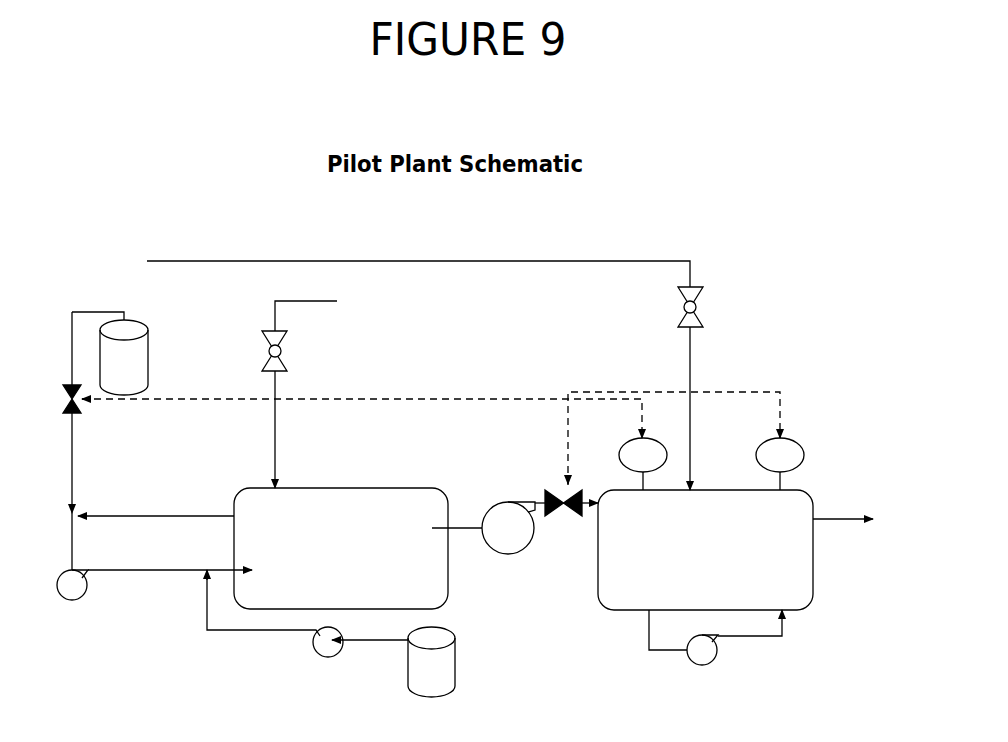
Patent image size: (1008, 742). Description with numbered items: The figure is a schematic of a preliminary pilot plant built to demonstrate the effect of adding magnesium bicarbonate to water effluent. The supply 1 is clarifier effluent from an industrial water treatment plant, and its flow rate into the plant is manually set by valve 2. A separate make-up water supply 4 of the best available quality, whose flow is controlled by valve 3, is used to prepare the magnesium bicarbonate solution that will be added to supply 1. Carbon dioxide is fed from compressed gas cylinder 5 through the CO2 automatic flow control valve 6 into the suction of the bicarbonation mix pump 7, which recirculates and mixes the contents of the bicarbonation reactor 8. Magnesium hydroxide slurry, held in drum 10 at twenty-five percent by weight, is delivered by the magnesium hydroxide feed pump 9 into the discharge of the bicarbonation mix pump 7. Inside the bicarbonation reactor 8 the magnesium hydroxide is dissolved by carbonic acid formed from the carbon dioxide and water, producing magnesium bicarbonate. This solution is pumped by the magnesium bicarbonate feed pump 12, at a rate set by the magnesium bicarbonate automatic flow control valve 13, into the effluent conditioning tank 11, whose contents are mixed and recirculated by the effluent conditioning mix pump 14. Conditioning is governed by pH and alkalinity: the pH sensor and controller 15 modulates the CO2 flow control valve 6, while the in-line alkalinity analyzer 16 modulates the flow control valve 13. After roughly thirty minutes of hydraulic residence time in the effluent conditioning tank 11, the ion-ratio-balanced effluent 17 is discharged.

The supply 1 is at (408, 268).
The valve 2 is at (265, 409).
The valve 3 is at (682, 388).
The make-up water supply 4 is at (316, 310).
The compressed gas cylinder 5 is at (110, 353).
The CO2 automatic flow control valve 6 is at (62, 441).
The bicarbonation mix pump 7 is at (154, 558).
The bicarbonation reactor 8 is at (341, 548).
The magnesium hydroxide feed pump 9 is at (307, 613).
The drum 10 is at (446, 662).
The effluent conditioning tank 11 is at (705, 550).
The magnesium bicarbonate feed pump 12 is at (488, 517).
The magnesium bicarbonate automatic flow control valve 13 is at (571, 514).
The effluent conditioning mix pump 14 is at (715, 642).
The pH sensor and controller 15 is at (637, 452).
The in-line alkalinity analyzer 16 is at (777, 452).
The ion-ratio-balanced effluent 17 is at (843, 534).